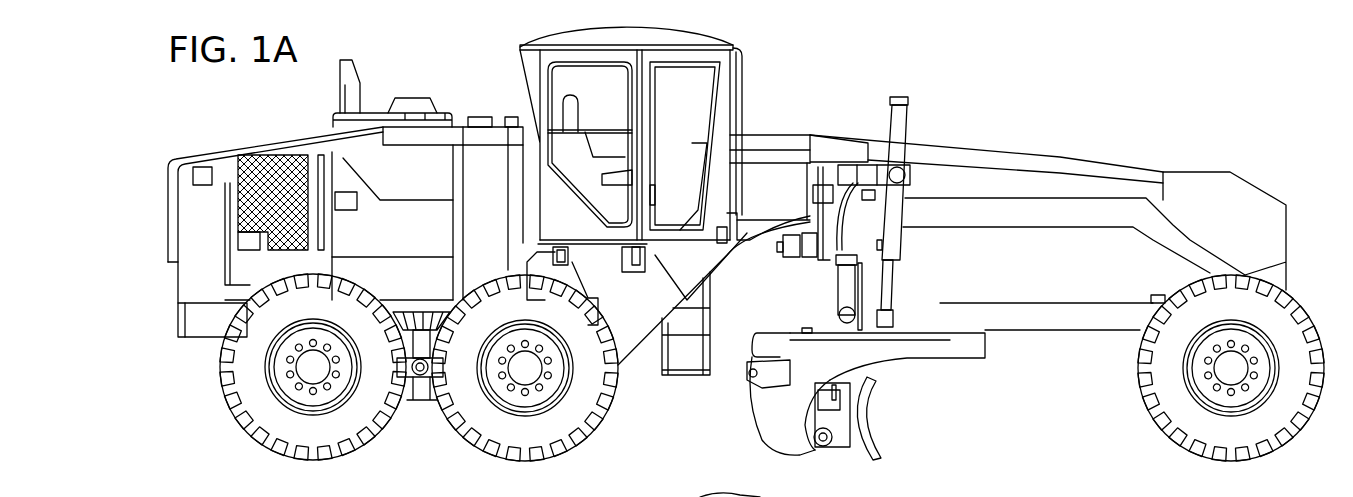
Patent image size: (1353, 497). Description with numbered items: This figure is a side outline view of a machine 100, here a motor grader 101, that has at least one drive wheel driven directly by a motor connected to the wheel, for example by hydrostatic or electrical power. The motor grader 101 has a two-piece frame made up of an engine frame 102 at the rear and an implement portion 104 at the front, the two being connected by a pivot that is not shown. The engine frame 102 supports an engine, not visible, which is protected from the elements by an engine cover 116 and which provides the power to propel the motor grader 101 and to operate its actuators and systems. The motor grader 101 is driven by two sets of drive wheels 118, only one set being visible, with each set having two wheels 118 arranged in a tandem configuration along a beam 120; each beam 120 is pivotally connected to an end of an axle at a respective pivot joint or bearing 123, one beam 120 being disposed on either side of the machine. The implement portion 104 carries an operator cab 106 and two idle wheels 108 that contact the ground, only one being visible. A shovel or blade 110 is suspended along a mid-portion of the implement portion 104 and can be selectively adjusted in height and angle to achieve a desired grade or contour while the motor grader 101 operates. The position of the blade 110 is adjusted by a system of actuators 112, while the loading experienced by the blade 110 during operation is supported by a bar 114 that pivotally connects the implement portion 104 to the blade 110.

The machine 100 is at (997, 84).
The motor grader 101 is at (786, 79).
The engine frame 102 is at (203, 322).
The implement portion 104 is at (1183, 188).
The operator cab 106 is at (558, 38).
The idle wheels 108 is at (1165, 392).
The blade 110 is at (860, 422).
The actuators 112 is at (835, 265).
The bar 114 is at (940, 317).
The engine cover 116 is at (278, 188).
The drive wheels 118 is at (287, 425).
The beam 120 is at (423, 393).
The pivot joint 123 is at (417, 400).